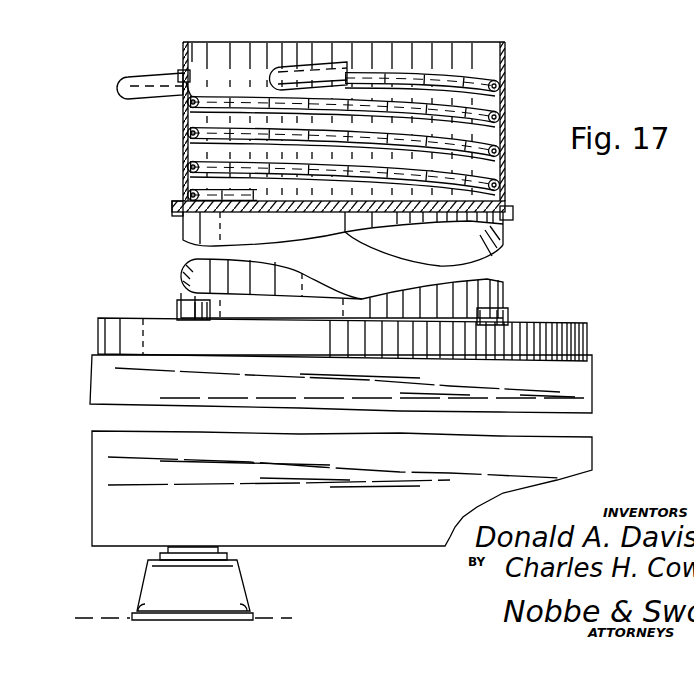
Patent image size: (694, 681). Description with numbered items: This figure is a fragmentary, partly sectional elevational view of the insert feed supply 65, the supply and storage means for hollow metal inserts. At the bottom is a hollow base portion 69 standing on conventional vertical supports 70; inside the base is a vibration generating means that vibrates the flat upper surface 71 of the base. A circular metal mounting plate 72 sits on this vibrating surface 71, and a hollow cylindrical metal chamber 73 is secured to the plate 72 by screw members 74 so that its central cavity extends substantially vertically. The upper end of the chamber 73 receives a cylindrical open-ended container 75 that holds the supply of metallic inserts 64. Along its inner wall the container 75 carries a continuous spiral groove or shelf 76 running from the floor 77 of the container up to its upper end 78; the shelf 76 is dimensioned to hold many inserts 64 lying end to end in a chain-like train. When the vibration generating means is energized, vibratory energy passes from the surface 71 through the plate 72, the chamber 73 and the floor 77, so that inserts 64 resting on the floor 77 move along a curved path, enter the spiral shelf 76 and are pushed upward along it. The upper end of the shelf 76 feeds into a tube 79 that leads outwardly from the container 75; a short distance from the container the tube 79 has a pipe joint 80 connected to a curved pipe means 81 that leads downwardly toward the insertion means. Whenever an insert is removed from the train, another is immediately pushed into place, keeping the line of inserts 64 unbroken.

The metallic inserts 64 is at (397, 110).
The insert feed supply 65 is at (530, 72).
The hollow base portion 69 is at (92, 452).
The vertical supports 70 is at (143, 578).
The flat upper surface 71 is at (92, 353).
The circular metal mounting plate 72 is at (587, 343).
The hollow cylindrical metal chamber 73 is at (504, 284).
The screw members 74 is at (186, 308).
The cylindrical open-ended container 75 is at (508, 186).
The spiral groove or shelf 76 is at (308, 178).
The floor 77 is at (354, 203).
The upper end 78 is at (472, 57).
The tube 79 is at (303, 61).
The pipe joint 80 is at (180, 72).
The curved pipe means 81 is at (138, 76).